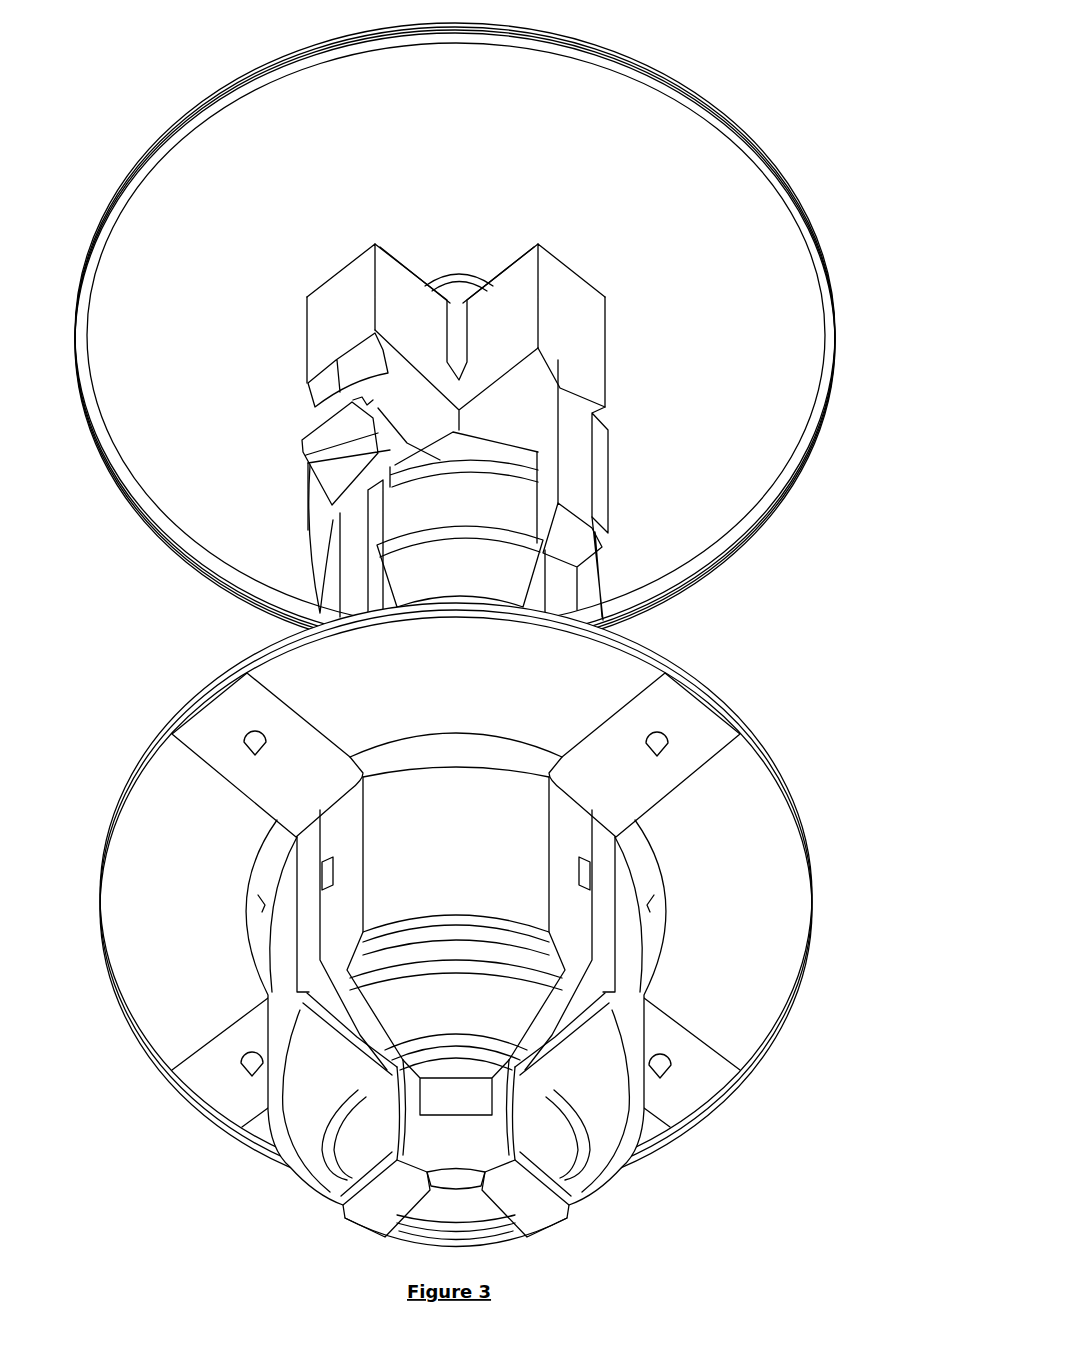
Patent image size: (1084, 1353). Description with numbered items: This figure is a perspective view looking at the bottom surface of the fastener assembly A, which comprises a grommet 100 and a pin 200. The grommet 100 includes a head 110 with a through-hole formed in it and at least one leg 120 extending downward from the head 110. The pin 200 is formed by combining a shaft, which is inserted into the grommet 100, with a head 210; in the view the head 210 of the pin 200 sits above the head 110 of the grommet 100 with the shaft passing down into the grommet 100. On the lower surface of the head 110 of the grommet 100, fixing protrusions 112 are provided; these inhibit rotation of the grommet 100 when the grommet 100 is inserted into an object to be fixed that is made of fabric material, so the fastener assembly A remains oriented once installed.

The grommet 100 is at (511, 925).
The head 110 is at (765, 1000).
The fixing protrusion 112 is at (662, 745).
The leg 120 is at (617, 1127).
The pin 200 is at (485, 326).
The head 210 is at (806, 387).
The fastener assembly A is at (708, 610).